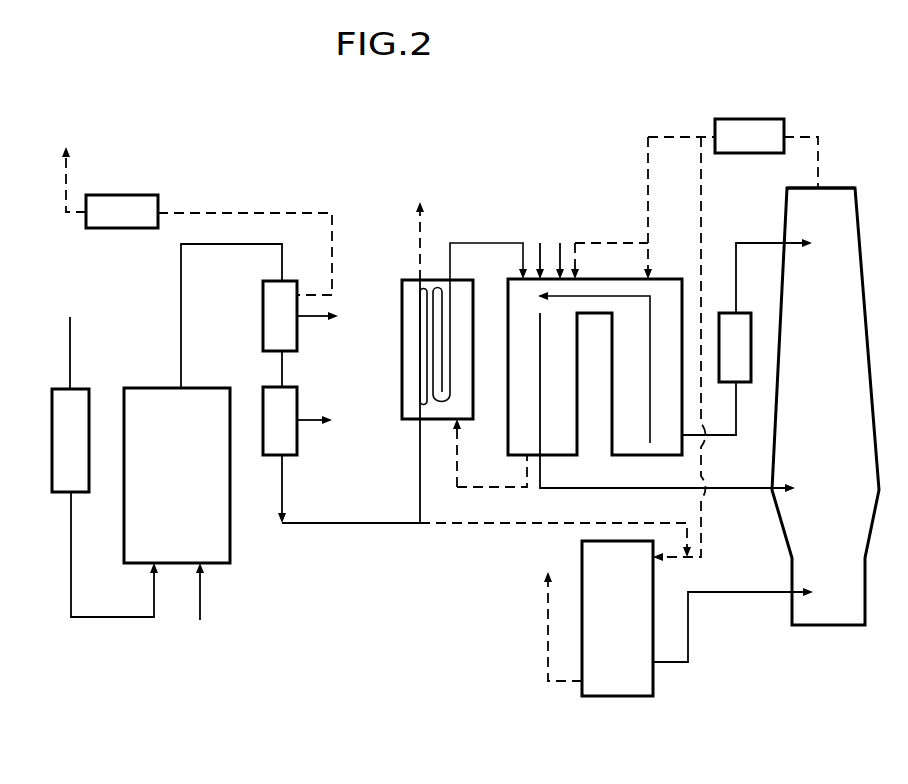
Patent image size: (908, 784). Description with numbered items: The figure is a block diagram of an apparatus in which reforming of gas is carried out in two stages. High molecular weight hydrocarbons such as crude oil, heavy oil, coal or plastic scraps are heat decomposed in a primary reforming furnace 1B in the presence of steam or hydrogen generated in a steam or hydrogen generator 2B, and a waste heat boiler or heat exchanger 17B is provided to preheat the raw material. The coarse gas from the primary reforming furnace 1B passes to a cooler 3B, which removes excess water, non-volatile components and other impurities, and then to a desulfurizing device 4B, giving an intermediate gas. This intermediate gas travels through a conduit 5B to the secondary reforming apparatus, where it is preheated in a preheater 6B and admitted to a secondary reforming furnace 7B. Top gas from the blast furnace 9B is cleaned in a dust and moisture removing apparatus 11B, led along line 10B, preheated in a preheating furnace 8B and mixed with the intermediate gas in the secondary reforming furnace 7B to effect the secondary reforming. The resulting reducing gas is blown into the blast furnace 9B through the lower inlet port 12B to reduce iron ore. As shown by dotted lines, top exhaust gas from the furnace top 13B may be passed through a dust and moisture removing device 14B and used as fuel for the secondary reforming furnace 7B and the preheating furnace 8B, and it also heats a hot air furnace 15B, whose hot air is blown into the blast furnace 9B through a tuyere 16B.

The primary reforming furnace 1B is at (180, 475).
The steam or hydrogen generator 2B is at (85, 453).
The cooler 3B is at (293, 325).
The desulfurizing device 4B is at (293, 435).
The conduit 5B is at (337, 523).
The preheater 6B is at (464, 344).
The secondary reforming furnace 7B is at (575, 397).
The preheating furnace 8B is at (643, 397).
The blast furnace 9B is at (828, 391).
The line 10B is at (766, 243).
The dust and moisture removing apparatus 11B is at (750, 360).
The lower inlet port 12B is at (769, 490).
The furnace top 13B is at (835, 188).
The dust and moisture removing device 14B is at (763, 150).
The hot air furnace 15B is at (637, 625).
The tuyere 16B is at (768, 596).
The waste heat boiler or heat exchanger 17B is at (140, 225).